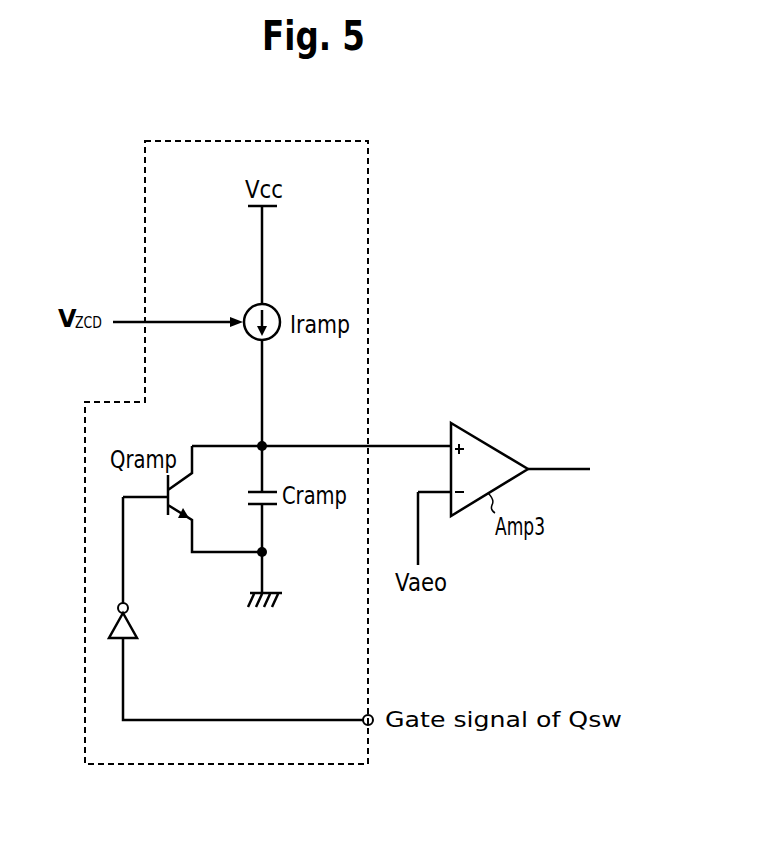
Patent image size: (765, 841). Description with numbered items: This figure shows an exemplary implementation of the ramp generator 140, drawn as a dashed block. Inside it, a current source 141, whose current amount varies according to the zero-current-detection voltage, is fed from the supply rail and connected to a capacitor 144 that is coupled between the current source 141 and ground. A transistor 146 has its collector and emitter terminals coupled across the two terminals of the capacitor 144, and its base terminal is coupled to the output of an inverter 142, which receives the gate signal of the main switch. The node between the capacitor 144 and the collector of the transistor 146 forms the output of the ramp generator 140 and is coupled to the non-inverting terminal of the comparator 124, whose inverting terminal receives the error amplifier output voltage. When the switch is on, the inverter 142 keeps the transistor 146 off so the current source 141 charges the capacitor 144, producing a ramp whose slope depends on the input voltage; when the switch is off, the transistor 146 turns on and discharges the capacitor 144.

The ramp generator 140 is at (318, 141).
The current source Iramp 141 is at (282, 293).
The inverter 142 is at (138, 628).
The capacitor Cramp 144 is at (270, 508).
The transistor Qramp 146 is at (167, 523).
The comparator Amp3 124 is at (495, 427).